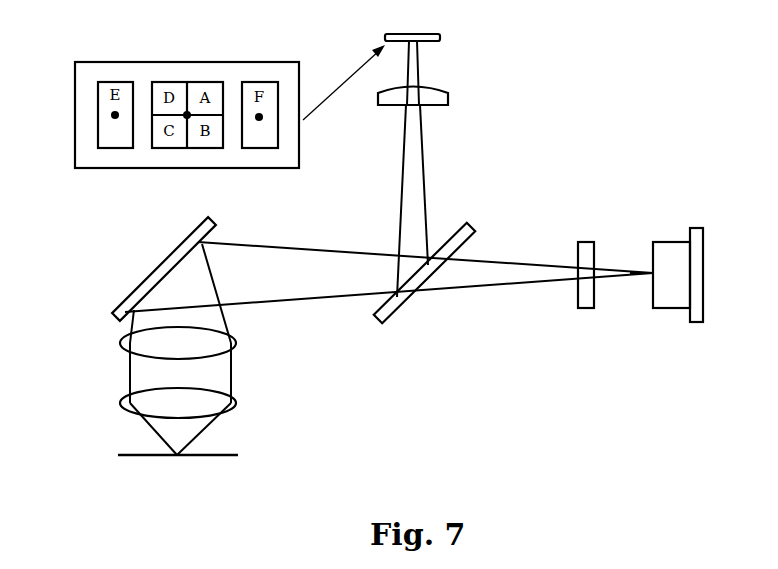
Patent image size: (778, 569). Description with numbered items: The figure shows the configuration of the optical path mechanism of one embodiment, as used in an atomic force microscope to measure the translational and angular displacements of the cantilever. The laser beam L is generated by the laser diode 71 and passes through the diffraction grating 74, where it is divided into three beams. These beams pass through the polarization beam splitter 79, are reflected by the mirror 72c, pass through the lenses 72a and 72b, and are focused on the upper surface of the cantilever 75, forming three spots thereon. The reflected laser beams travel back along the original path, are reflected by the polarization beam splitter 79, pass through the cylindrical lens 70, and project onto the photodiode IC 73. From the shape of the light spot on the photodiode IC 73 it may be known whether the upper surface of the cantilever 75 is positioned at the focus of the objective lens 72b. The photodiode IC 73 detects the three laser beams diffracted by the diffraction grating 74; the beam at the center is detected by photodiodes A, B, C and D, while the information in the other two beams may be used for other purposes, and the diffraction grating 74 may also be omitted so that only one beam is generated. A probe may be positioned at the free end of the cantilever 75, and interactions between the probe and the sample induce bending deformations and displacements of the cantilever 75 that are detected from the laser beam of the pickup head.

The cylindrical lens 70 is at (429, 97).
The laser diode 71 is at (681, 294).
The lens 72a is at (205, 341).
The objective lens 72b is at (205, 410).
The mirror 72c is at (133, 288).
The photodiode IC 73 is at (432, 43).
The diffraction grating 74 is at (592, 293).
The cantilever 75 is at (178, 479).
The polarization beam splitter 79 is at (410, 303).
The laser beam L is at (522, 265).